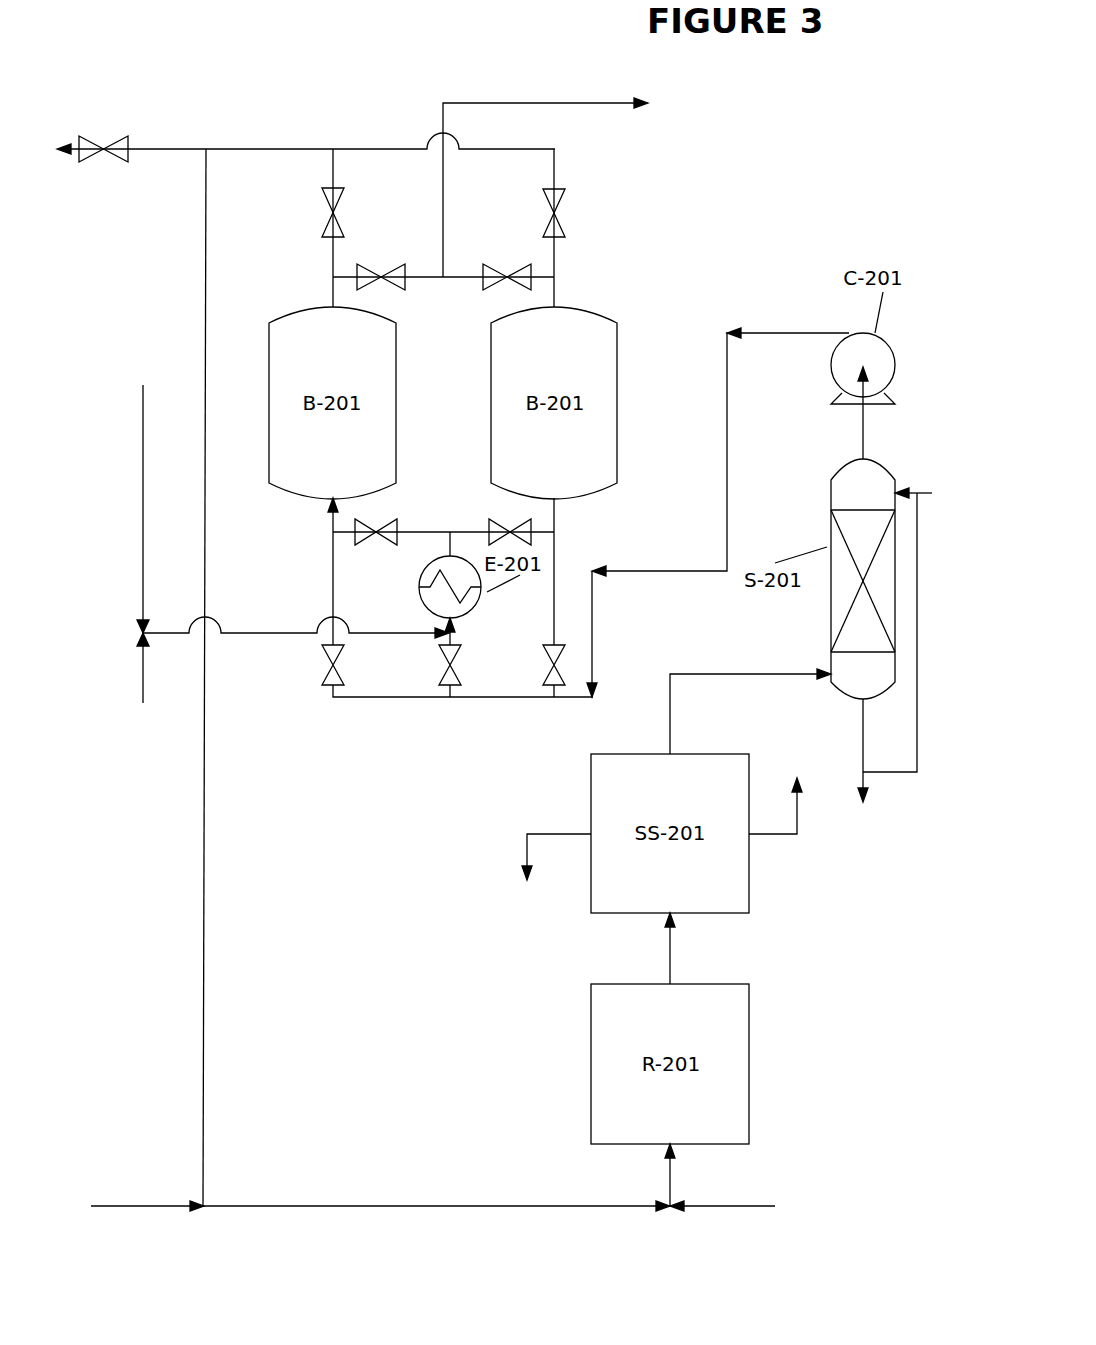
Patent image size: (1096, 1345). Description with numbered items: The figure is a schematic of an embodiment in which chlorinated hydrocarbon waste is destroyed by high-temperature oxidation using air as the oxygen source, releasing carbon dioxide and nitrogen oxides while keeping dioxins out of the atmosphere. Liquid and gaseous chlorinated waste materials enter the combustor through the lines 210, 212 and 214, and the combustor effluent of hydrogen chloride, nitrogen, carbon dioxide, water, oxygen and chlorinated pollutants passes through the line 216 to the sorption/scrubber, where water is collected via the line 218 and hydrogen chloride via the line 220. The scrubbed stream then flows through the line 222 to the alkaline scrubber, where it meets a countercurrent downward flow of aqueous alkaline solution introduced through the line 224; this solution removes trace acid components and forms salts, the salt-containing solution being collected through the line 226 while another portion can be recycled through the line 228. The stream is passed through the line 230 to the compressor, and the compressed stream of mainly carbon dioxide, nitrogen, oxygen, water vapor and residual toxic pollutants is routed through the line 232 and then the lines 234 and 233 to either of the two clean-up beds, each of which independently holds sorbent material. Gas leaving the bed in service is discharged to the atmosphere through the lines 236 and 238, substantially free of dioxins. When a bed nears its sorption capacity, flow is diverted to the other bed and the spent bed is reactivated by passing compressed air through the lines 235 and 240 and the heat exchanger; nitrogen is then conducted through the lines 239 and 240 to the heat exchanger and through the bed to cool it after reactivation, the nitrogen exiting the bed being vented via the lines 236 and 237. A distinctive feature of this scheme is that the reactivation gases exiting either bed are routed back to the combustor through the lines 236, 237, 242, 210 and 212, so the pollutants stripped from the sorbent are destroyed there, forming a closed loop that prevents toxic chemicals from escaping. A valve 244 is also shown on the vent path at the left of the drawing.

The line 210 is at (380, 1230).
The line 212 is at (677, 1182).
The line 214 is at (704, 1217).
The line 216 is at (675, 953).
The line 218 is at (518, 840).
The line 220 is at (775, 839).
The line 222 is at (767, 668).
The line 224 is at (928, 490).
The line 226 is at (855, 758).
The line 228 is at (885, 775).
The line 230 is at (868, 430).
The line 232 is at (723, 332).
The line 233 is at (338, 602).
The line 234 is at (557, 563).
The line 235 is at (135, 667).
The lines 236 is at (329, 247).
The line 237 is at (317, 143).
The line 238 is at (553, 107).
The line 239 is at (135, 463).
The line 240 is at (262, 627).
The line 242 is at (215, 302).
The vent valve 244 is at (95, 133).